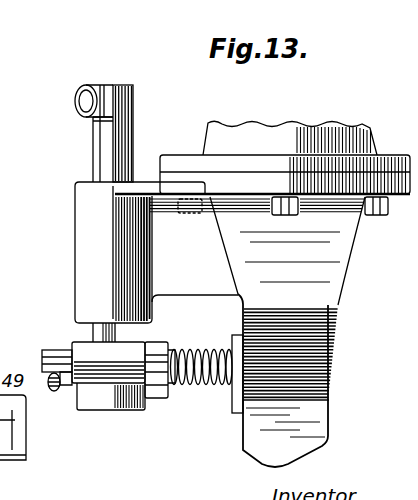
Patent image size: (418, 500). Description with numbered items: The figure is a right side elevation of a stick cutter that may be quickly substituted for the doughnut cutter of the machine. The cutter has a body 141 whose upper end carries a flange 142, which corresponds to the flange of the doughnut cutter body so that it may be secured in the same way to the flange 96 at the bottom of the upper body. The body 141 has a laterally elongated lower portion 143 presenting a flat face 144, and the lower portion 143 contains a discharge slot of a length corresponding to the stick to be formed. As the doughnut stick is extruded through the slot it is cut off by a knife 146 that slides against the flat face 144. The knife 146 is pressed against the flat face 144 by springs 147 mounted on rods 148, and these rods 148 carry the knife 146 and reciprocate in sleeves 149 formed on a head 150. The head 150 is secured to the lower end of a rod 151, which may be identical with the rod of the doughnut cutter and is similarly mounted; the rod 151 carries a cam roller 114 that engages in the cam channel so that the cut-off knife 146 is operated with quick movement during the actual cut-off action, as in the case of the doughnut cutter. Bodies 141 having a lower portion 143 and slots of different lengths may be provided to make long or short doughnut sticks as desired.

The flange 96 is at (221, 160).
The cam roller 114 is at (103, 92).
The body 141 is at (257, 251).
The flange 142 is at (262, 175).
The lower portion 143 is at (329, 413).
The flat face 144 is at (243, 437).
The knife 146 is at (237, 395).
The springs 147 is at (193, 348).
The rods 148 is at (45, 352).
The sleeves 149 is at (108, 372).
The head 150 is at (157, 410).
The rod 151 is at (128, 139).